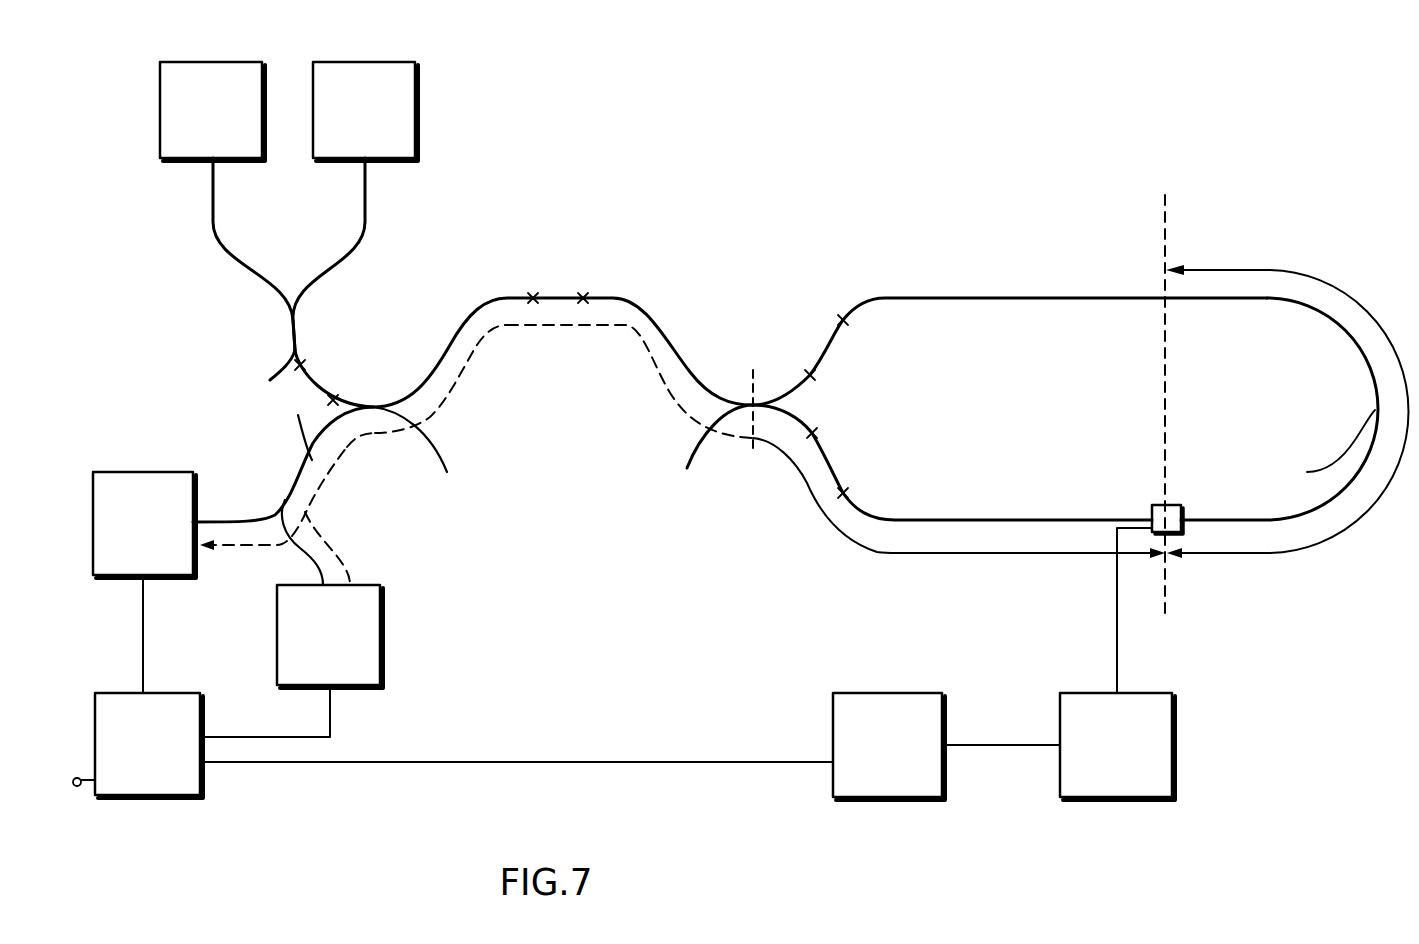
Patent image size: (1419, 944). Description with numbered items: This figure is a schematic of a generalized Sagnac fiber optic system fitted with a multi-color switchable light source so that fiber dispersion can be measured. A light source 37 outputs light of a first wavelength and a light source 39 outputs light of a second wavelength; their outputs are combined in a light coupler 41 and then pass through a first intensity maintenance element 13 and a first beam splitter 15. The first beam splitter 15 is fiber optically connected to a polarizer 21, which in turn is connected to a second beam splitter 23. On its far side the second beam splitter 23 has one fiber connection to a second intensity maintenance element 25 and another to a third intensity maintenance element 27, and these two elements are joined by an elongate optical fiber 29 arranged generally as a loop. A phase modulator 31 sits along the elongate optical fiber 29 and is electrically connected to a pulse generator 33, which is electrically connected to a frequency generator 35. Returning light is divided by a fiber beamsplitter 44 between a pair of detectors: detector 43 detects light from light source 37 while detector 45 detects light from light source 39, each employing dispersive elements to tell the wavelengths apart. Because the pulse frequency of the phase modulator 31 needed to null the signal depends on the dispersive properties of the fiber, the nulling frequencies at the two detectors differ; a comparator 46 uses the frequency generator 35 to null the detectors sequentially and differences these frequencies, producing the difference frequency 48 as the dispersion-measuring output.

The first intensity maintenance element 13 is at (317, 383).
The first beam splitter 15 is at (377, 410).
The polarizer 21 is at (558, 298).
The second beam splitter 23 is at (707, 427).
The second intensity maintenance element 25 is at (812, 350).
The third intensity maintenance element 27 is at (827, 467).
The elongate optical fiber 29 is at (1363, 365).
The phase modulator 31 is at (1150, 500).
The pulse generator 33 is at (1097, 758).
The frequency generator 35 is at (863, 764).
The light source 37 is at (195, 128).
The light source 39 is at (347, 125).
The light coupler 41 is at (290, 327).
The detector 43 is at (126, 539).
The fiber beamsplitter 44 is at (300, 467).
The detector 45 is at (308, 649).
The comparator 46 is at (129, 765).
The difference frequency 48 is at (77, 778).